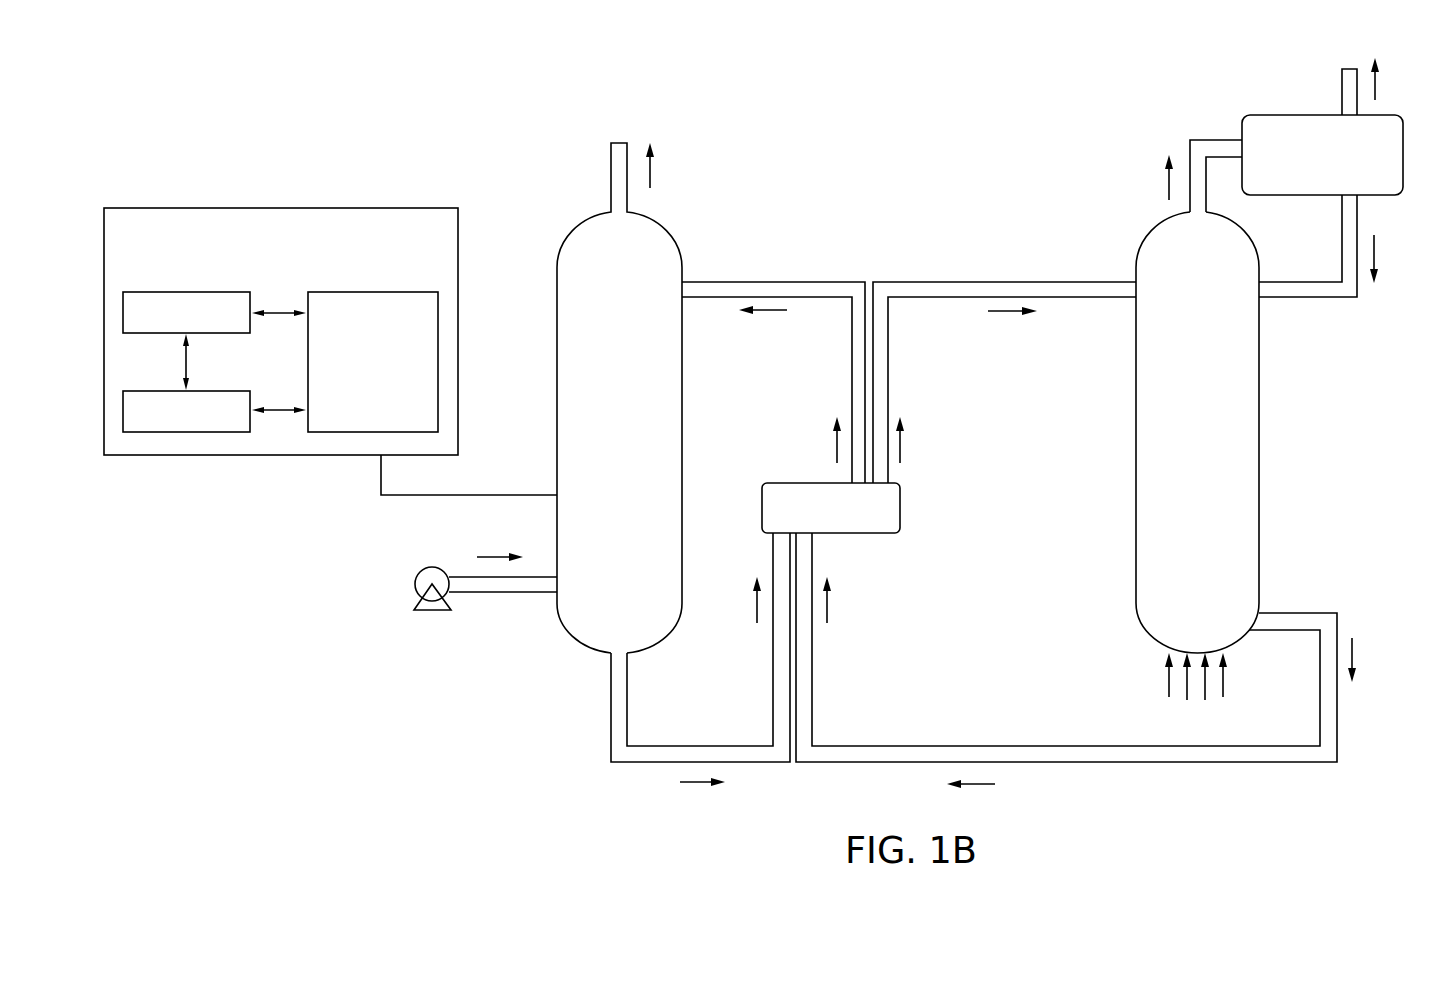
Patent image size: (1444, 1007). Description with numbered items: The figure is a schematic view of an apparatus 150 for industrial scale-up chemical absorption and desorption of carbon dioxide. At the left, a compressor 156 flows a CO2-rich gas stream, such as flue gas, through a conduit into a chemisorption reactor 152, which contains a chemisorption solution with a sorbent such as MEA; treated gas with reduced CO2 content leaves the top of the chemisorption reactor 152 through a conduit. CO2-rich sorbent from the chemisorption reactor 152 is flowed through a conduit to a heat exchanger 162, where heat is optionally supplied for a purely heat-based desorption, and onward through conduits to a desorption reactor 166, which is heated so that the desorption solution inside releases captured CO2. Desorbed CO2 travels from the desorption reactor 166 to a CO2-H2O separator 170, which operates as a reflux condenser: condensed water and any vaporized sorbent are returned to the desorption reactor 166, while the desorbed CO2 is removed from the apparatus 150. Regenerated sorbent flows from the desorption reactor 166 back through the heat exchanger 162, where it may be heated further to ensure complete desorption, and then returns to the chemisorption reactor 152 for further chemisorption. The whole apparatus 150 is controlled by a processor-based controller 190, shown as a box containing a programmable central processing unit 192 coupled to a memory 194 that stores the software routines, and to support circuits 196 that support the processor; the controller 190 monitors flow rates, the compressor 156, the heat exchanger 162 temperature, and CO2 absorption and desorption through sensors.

The apparatus 150 is at (597, 102).
The chemisorption reactor 152 is at (639, 447).
The compressor 156 is at (413, 571).
The heat exchanger 162 is at (855, 548).
The desorption reactor 166 is at (1218, 447).
The CO2-H2O separator 170 is at (1300, 107).
The controller 190 is at (348, 207).
The central processing unit 192 is at (197, 290).
The memory 194 is at (206, 390).
The support circuits 196 is at (362, 290).